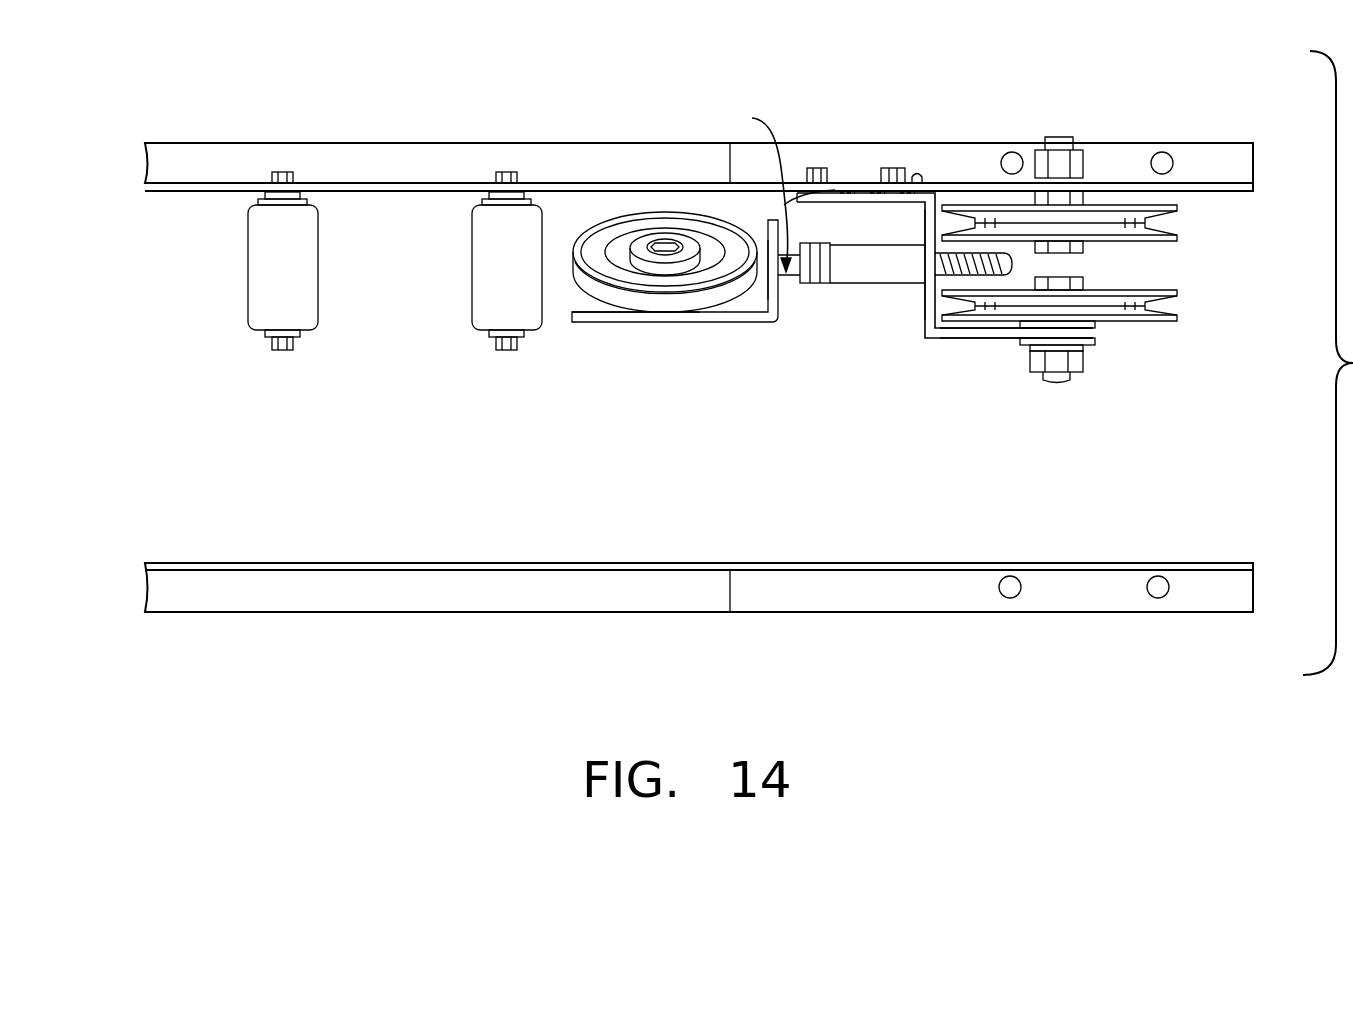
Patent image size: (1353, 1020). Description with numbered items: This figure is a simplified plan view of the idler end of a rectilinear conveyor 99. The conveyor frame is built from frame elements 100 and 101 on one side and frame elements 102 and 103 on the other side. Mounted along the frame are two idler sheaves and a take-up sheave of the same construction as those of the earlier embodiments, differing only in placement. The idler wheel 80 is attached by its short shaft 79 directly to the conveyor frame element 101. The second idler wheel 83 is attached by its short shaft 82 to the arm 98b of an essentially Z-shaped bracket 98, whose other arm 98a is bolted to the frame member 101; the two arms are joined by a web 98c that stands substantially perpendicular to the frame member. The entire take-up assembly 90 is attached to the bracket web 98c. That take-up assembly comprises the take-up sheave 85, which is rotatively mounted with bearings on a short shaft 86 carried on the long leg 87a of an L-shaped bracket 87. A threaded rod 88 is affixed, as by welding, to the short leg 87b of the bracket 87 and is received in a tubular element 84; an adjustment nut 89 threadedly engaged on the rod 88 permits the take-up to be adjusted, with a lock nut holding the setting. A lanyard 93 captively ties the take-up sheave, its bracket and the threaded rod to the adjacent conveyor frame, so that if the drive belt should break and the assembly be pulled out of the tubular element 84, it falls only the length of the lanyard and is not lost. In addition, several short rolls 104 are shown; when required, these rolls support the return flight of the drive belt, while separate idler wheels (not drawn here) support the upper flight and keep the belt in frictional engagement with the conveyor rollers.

The rectilinear conveyor 99 is at (672, 78).
The frame element 100 is at (416, 145).
The frame element 101 is at (958, 150).
The frame element 102 is at (390, 614).
The frame element 103 is at (888, 614).
The short rolls 104 is at (248, 257).
The short shaft 79 is at (1092, 191).
The idler wheel 80 is at (1150, 222).
The short shaft 82 is at (1057, 383).
The idler wheel 83 is at (1155, 298).
The tubular element 84 is at (898, 272).
The take-up sheave 85 is at (585, 280).
The short shaft 86 is at (665, 245).
The L-shaped bracket 87 is at (720, 316).
The long leg 87a is at (580, 322).
The short leg 87b is at (783, 300).
The threaded rod 88 is at (950, 257).
The adjustment nut 89 is at (818, 250).
The take-up assembly 90 is at (830, 298).
The lanyard 93 is at (774, 186).
The bracket 98 is at (936, 338).
The first leg portion 98a is at (836, 191).
The second leg portion 98b is at (1010, 338).
The web portion 98c is at (926, 310).